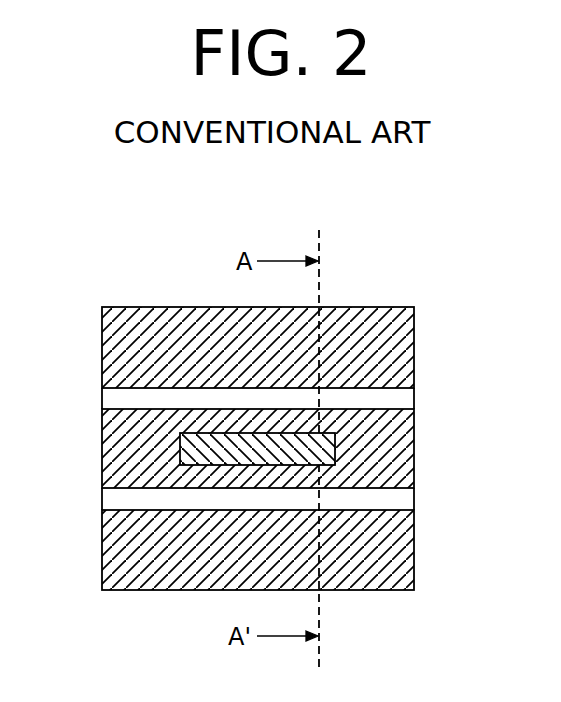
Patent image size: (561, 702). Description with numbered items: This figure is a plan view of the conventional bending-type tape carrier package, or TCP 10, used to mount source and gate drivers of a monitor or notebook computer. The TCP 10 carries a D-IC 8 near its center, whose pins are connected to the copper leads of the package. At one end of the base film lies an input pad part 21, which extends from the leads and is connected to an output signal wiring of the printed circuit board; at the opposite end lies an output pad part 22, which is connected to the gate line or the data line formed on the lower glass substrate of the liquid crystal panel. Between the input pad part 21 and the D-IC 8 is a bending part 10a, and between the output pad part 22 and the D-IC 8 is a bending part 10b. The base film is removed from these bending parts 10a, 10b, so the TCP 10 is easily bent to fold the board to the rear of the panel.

The tape carrier package 10 is at (436, 271).
The bending part 10a is at (107, 500).
The bending part 10b is at (107, 398).
The input pad part 21 is at (414, 551).
The output pad part 22 is at (414, 346).
The D-IC 8 is at (338, 441).